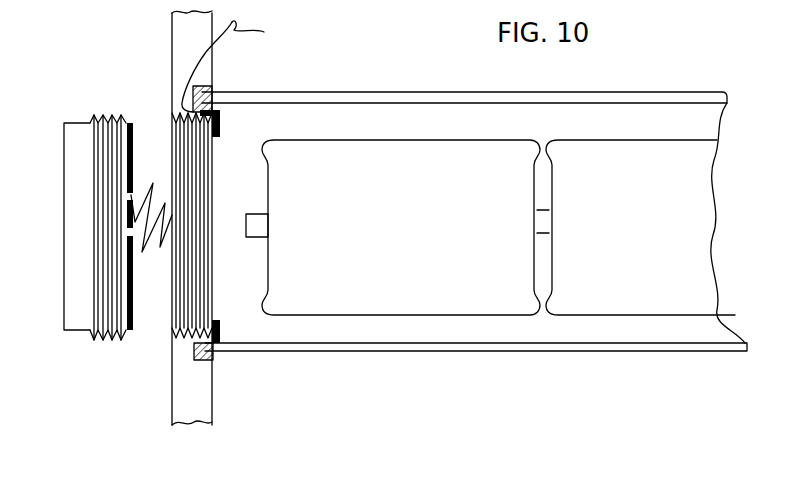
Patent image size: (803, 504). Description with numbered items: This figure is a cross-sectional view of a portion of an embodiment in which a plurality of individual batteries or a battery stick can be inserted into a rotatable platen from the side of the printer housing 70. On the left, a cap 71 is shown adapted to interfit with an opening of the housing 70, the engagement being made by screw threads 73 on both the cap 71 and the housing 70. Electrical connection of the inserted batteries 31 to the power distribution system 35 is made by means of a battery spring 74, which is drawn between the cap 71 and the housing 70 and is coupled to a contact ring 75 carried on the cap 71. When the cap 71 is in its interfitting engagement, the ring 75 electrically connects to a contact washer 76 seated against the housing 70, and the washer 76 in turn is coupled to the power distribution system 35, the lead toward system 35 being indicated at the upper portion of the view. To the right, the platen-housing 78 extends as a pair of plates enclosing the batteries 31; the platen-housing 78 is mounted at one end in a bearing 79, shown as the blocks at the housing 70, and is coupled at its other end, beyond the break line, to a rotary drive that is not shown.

The printer housing 70 is at (171, 53).
The cap 71 is at (60, 210).
The screw threads 73 is at (100, 338).
The battery spring 74 is at (158, 200).
The contact ring 75 is at (133, 337).
The contact washer 76 is at (222, 128).
The platen-housing 78 is at (510, 352).
The bearing 79 is at (205, 84).
The battery 31 is at (415, 245).
The power distribution system 35 is at (250, 66).